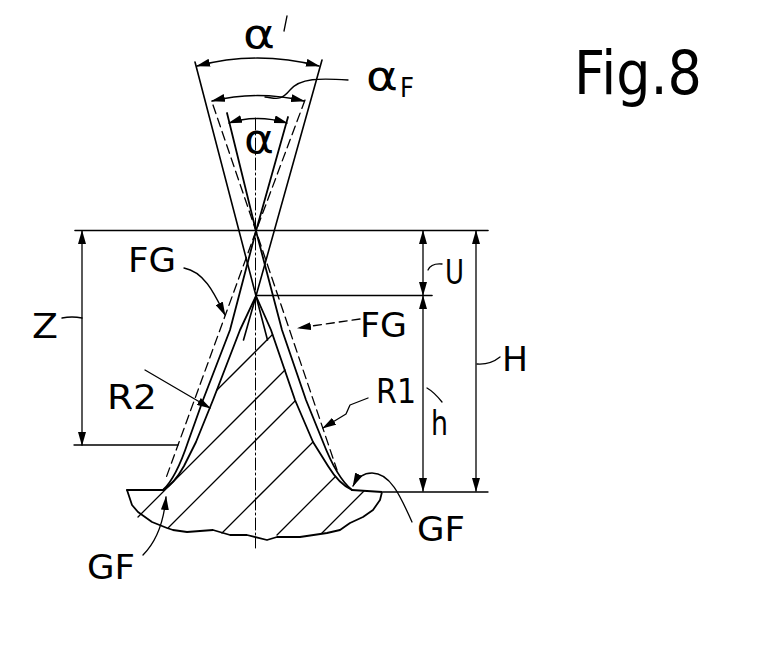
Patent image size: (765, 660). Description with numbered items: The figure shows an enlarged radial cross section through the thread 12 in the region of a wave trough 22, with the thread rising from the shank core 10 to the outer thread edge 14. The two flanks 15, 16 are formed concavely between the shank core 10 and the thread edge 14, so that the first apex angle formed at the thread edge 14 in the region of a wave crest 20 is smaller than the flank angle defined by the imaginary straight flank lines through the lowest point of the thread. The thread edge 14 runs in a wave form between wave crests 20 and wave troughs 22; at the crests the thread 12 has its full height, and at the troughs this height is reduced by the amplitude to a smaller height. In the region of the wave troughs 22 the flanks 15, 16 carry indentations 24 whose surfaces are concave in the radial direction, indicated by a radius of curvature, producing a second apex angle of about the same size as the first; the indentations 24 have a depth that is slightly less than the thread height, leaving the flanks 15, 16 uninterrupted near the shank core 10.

The shank core 10 is at (323, 508).
The thread 12 is at (230, 451).
The thread edge 14 is at (248, 256).
The flank 15 is at (328, 447).
The flank 16 is at (178, 461).
The wave crest 20 is at (263, 227).
The wave trough 22 is at (259, 291).
The indentation 24 is at (228, 362).